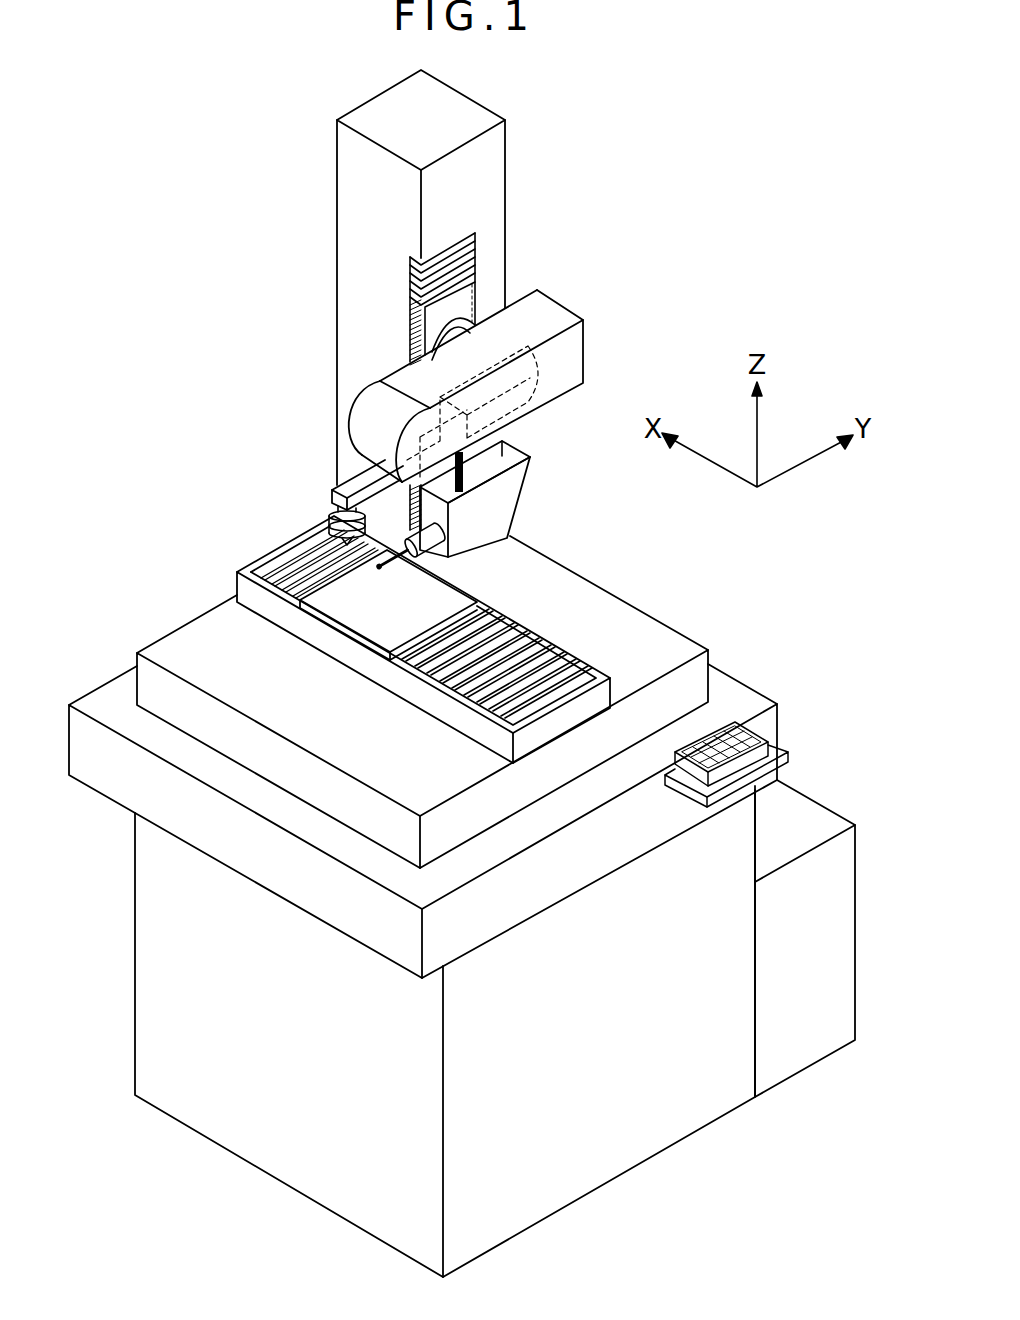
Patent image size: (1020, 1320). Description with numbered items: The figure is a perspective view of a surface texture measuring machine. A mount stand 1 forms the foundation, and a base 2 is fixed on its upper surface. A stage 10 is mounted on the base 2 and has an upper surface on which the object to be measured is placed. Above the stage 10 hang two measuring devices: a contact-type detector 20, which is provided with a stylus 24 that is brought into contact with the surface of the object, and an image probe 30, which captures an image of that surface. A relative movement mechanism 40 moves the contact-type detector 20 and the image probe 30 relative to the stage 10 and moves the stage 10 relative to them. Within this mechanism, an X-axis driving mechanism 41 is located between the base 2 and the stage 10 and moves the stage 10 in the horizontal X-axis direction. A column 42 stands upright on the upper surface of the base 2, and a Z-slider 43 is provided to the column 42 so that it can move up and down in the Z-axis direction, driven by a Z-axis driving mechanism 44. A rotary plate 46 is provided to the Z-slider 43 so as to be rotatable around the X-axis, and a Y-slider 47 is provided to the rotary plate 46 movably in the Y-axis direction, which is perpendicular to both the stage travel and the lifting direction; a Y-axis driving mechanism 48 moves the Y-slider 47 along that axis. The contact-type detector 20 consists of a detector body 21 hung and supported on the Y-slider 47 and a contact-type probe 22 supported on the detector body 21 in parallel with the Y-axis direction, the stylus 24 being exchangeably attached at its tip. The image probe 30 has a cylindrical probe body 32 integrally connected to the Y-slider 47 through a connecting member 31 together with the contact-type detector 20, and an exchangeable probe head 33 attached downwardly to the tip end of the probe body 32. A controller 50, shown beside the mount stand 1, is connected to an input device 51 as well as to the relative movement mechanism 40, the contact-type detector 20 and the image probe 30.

The mount stand 1 is at (145, 971).
The base 2 is at (185, 637).
The stage 10 is at (423, 641).
The contact-type detector 20 is at (510, 527).
The detector body 21 is at (510, 512).
The contact-type probe 22 is at (505, 530).
The stylus 24 is at (388, 568).
The image probe 30 is at (289, 486).
The connecting member 31 is at (482, 474).
The probe body 32 is at (362, 475).
The probe head 33 is at (294, 521).
The relative movement mechanism 40 is at (394, 300).
The X-axis driving mechanism 41 is at (485, 697).
The column 42 is at (347, 233).
The Z-slider 43 is at (430, 322).
The Z-axis driving mechanism 44 is at (462, 258).
The rotary plate 46 is at (412, 333).
The Y-slider 47 is at (507, 412).
The Y-axis driving mechanism 48 is at (585, 355).
The controller 50 is at (845, 913).
The input device 51 is at (787, 767).